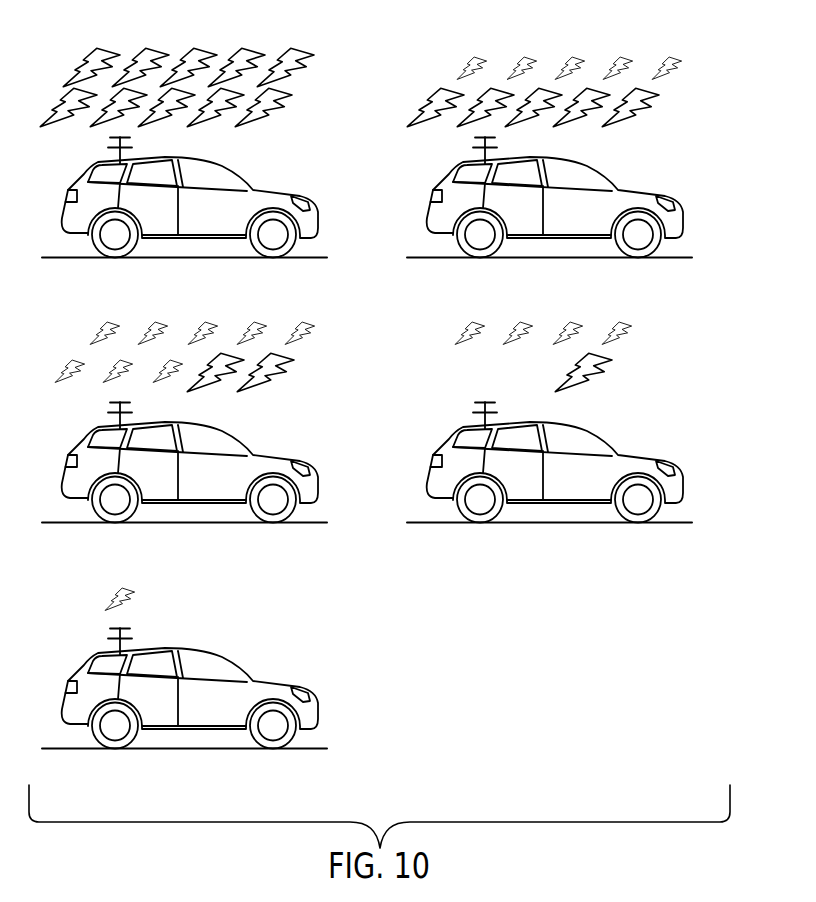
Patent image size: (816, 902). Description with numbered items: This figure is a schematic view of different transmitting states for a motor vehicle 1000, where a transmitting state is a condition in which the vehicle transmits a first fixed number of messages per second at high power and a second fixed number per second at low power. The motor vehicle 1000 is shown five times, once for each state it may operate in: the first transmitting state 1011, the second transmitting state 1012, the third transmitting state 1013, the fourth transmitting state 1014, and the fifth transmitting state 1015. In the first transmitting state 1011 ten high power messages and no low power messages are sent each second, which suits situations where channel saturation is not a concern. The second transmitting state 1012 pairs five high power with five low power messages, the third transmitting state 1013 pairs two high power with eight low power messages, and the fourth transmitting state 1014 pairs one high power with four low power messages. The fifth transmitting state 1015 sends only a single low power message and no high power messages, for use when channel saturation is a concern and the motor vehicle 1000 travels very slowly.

The motor vehicle 1000 is at (255, 185).
The first transmitting state 1011 is at (318, 77).
The second transmitting state 1012 is at (683, 88).
The third transmitting state 1013 is at (648, 348).
The fourth transmitting state 1014 is at (318, 355).
The fifth transmitting state 1015 is at (288, 640).